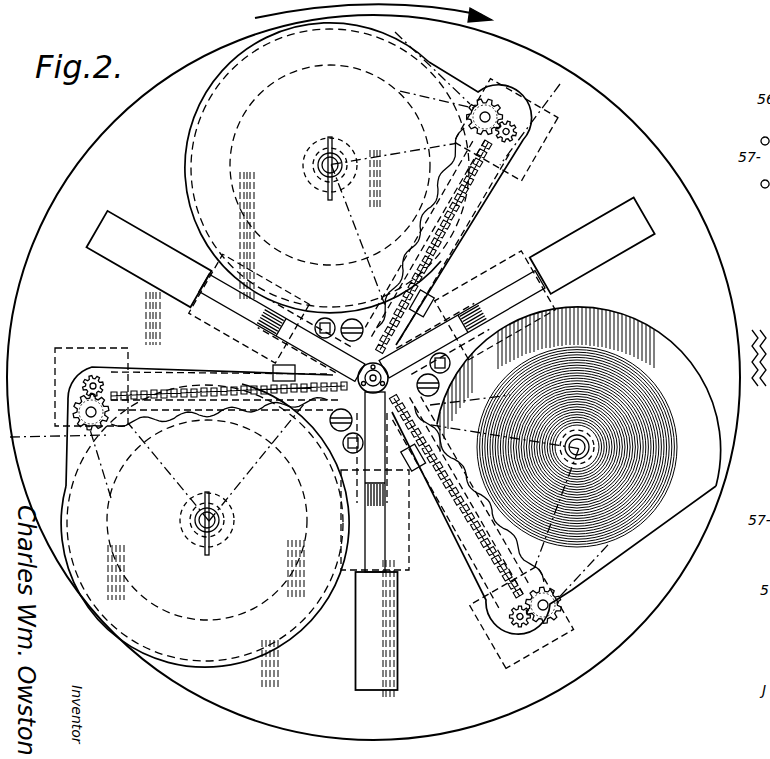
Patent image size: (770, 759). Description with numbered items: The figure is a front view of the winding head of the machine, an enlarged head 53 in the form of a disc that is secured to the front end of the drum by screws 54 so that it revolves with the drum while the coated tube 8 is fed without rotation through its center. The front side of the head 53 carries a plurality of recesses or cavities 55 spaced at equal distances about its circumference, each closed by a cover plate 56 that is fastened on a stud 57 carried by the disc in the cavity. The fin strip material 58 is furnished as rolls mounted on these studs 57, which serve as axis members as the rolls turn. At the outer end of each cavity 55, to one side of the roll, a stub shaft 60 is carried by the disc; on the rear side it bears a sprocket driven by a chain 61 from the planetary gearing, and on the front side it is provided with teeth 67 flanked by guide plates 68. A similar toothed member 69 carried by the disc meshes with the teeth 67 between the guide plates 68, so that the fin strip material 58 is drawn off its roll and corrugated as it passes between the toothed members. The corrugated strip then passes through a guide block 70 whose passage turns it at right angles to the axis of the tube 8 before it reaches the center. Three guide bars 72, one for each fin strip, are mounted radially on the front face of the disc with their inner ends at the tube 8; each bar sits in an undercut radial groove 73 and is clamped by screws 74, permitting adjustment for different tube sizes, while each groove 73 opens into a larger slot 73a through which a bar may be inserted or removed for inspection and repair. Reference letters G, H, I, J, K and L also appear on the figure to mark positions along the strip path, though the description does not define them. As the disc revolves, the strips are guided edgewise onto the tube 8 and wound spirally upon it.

The coated tube 8 is at (388, 372).
The head 53 is at (636, 136).
The screws 54 is at (392, 351).
The recesses or cavities 55 is at (390, 374).
The cover plates 56 is at (363, 345).
The studs 57 is at (421, 346).
The fin strip material 58 is at (388, 345).
The stub shaft 60 is at (333, 347).
The chains 61 is at (324, 322).
The teeth 67 is at (307, 371).
The guide plates 68 is at (333, 360).
The toothed member 69 is at (328, 396).
The guide blocks 70 is at (376, 395).
The guide bars 72 is at (372, 421).
The undercut radial grooves 73 is at (372, 405).
The larger slots 73a is at (371, 443).
The screws 74 is at (414, 381).
The direction arrow G is at (413, 477).
The position H is at (449, 465).
The position I is at (545, 597).
The position J is at (545, 610).
The position K is at (343, 443).
The position L is at (442, 413).